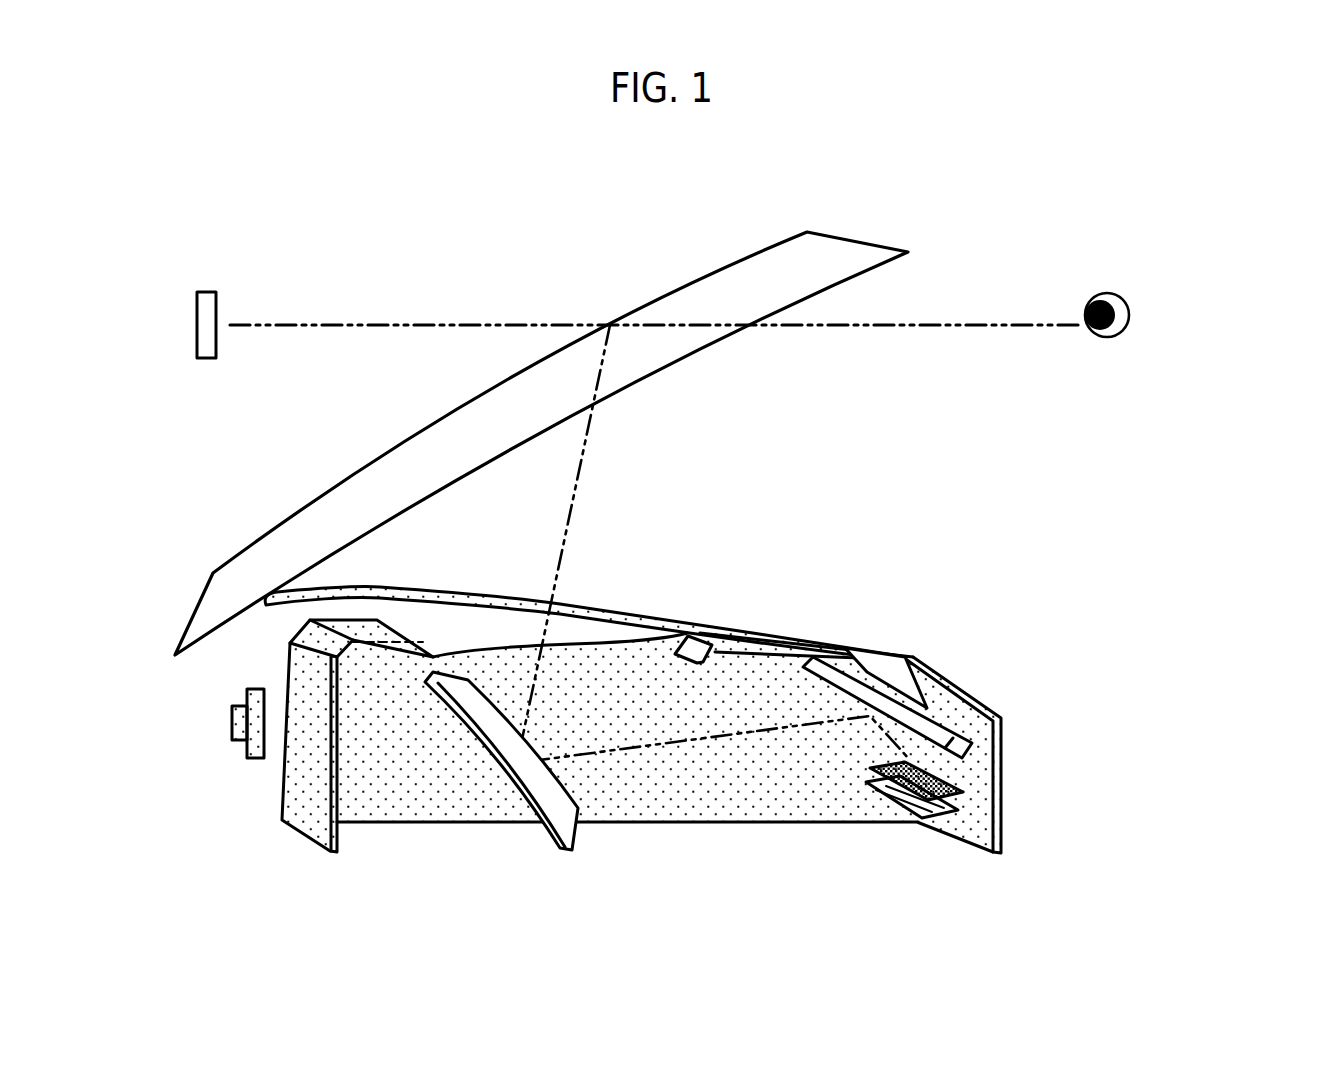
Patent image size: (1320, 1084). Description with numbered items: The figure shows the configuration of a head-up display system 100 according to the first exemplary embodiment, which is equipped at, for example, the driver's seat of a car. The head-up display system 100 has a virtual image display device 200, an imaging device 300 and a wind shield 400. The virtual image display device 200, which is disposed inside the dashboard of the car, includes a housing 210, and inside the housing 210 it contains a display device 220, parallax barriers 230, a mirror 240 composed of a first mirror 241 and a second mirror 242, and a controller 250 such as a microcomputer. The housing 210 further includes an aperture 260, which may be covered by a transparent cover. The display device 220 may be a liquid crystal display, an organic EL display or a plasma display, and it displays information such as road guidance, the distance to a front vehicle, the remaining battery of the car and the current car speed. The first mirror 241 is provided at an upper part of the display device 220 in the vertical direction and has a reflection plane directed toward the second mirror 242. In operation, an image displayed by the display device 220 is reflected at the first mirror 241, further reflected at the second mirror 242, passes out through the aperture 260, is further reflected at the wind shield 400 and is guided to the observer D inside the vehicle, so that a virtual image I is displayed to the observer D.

The head-up display system 100 is at (496, 164).
The virtual image display device 200 is at (734, 684).
The housing 210 is at (978, 737).
The display device 220 is at (960, 808).
The parallax barriers 230 is at (987, 782).
The mirror 240 is at (730, 695).
The first mirror 241 is at (862, 660).
The second mirror 242 is at (557, 783).
The controller 250 is at (985, 836).
The aperture 260 is at (593, 634).
The imaging device 300 is at (256, 747).
The wind shield 400 is at (735, 262).
The virtual image I is at (203, 290).
The observer D is at (1130, 307).